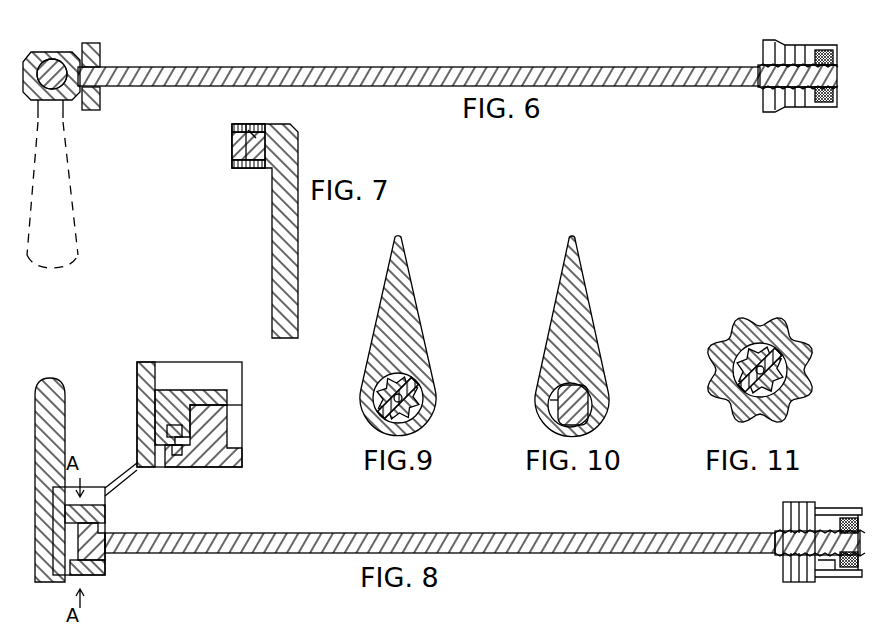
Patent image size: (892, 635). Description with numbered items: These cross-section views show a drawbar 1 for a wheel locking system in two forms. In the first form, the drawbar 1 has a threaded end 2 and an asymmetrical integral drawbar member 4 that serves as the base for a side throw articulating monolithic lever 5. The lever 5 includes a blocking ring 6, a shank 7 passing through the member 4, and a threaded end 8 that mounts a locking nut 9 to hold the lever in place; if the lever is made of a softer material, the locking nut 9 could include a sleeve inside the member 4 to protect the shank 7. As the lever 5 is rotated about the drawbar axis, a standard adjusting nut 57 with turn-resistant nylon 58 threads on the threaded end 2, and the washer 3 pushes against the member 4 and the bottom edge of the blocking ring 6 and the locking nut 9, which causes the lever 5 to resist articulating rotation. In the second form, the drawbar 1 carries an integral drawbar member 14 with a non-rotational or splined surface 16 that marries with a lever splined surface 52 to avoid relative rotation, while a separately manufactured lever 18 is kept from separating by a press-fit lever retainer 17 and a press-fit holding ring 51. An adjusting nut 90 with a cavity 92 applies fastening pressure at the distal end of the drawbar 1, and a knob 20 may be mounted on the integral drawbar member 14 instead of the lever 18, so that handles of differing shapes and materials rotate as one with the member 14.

In FIG. 6, the drawbar 1 is at (438, 68).
In FIG. 8, the drawbar 1 is at (580, 545).
In FIG. 6, the threaded end 2 is at (763, 60).
In FIG. 6, the washer 3 is at (98, 50).
In FIG. 6, the asymmetrical integral drawbar member 4 is at (38, 62).
In FIG. 7, the asymmetrical integral drawbar member 4 is at (258, 125).
In FIG. 6, the side throw articulating monolithic lever 5 is at (58, 228).
In FIG. 7, the side throw articulating monolithic lever 5 is at (285, 258).
In FIG. 7, the blocking ring 6 is at (268, 165).
In FIG. 6, the shank 7 is at (56, 66).
In FIG. 7, the shank 7 is at (248, 128).
In FIG. 7, the threaded end 8 is at (233, 138).
In FIG. 7, the locking nut 9 is at (235, 126).
In FIG. 8, the locking nut 9 is at (833, 512).
In FIG. 8, the integral drawbar member 14 is at (207, 453).
In FIG. 9, the integral drawbar member 14 is at (378, 390).
In FIG. 10, the integral drawbar member 14 is at (583, 407).
In FIG. 11, the integral drawbar member 14 is at (762, 330).
In FIG. 6, the splined surface 16 is at (386, 0).
In FIG. 8, the splined surface 16 is at (222, 430).
In FIG. 9, the splined surface 16 is at (410, 375).
In FIG. 10, the splined surface 16 is at (567, 372).
In FIG. 11, the splined surface 16 is at (775, 345).
In FIG. 8, the press-fit lever retainer 17 is at (174, 452).
In FIG. 8, the lever 18 is at (65, 420).
In FIG. 9, the lever 18 is at (390, 332).
In FIG. 10, the lever 18 is at (582, 312).
In FIG. 11, the knob 20 is at (733, 335).
In FIG. 8, the press-fit holding ring 51 is at (166, 428).
In FIG. 8, the lever splined surface 52 is at (240, 430).
In FIG. 9, the lever splined surface 52 is at (434, 396).
In FIG. 10, the lever splined surface 52 is at (557, 405).
In FIG. 11, the lever splined surface 52 is at (742, 385).
In FIG. 6, the adjusting nut 57 is at (797, 50).
In FIG. 6, the turn-resistant nylon 58 is at (820, 102).
In FIG. 8, the adjusting nut 90 is at (792, 523).
In FIG. 8, the cavity 92 is at (827, 568).